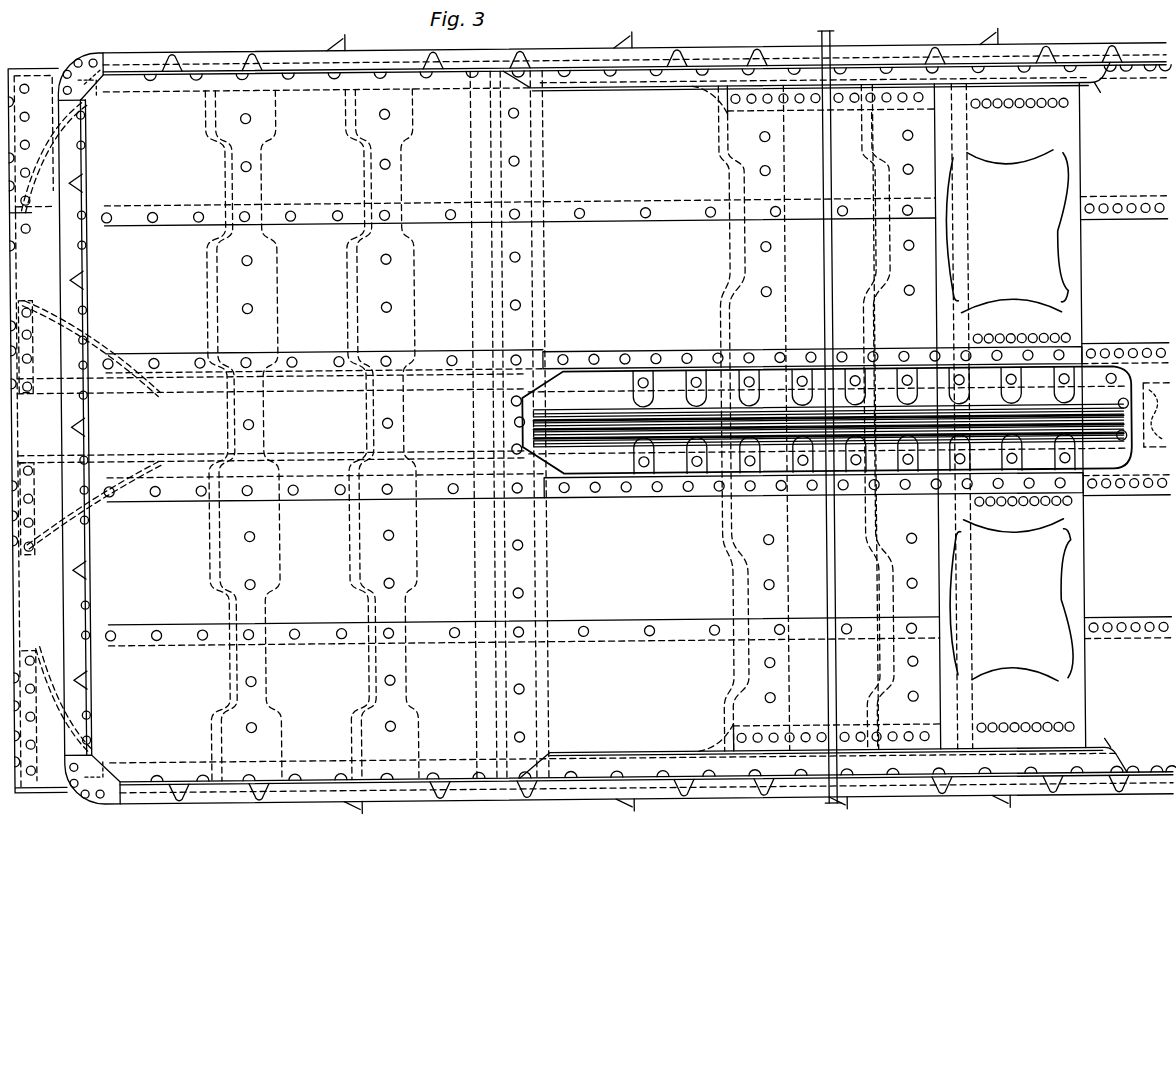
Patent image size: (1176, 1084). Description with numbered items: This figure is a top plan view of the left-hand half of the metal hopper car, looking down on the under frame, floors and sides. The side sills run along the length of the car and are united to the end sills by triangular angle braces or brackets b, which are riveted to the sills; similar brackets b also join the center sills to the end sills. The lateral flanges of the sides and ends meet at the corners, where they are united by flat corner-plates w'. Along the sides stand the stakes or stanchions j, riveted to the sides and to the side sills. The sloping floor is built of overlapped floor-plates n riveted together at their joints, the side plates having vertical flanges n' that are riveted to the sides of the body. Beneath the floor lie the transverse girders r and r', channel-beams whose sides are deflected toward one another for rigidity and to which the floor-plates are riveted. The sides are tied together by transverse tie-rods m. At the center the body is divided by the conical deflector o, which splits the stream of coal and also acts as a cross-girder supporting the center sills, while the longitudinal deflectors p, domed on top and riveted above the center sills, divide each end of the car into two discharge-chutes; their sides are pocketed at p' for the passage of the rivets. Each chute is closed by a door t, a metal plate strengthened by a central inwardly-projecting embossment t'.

The corner-plate w' is at (99, 414).
The angle brace b is at (85, 142).
The floor-plate n is at (593, 424).
The vertical flange n' is at (638, 422).
The stake j is at (635, 52).
The conical deflector o is at (1126, 380).
The door t is at (1009, 416).
The embossment t' is at (1010, 416).
The transverse tie-rod m is at (830, 172).
The longitudinal deflector p is at (823, 422).
The side sill a' is at (1156, 415).
The pocket p' is at (1126, 497).
The transverse girder r is at (227, 435).
The transverse girder r' is at (366, 434).